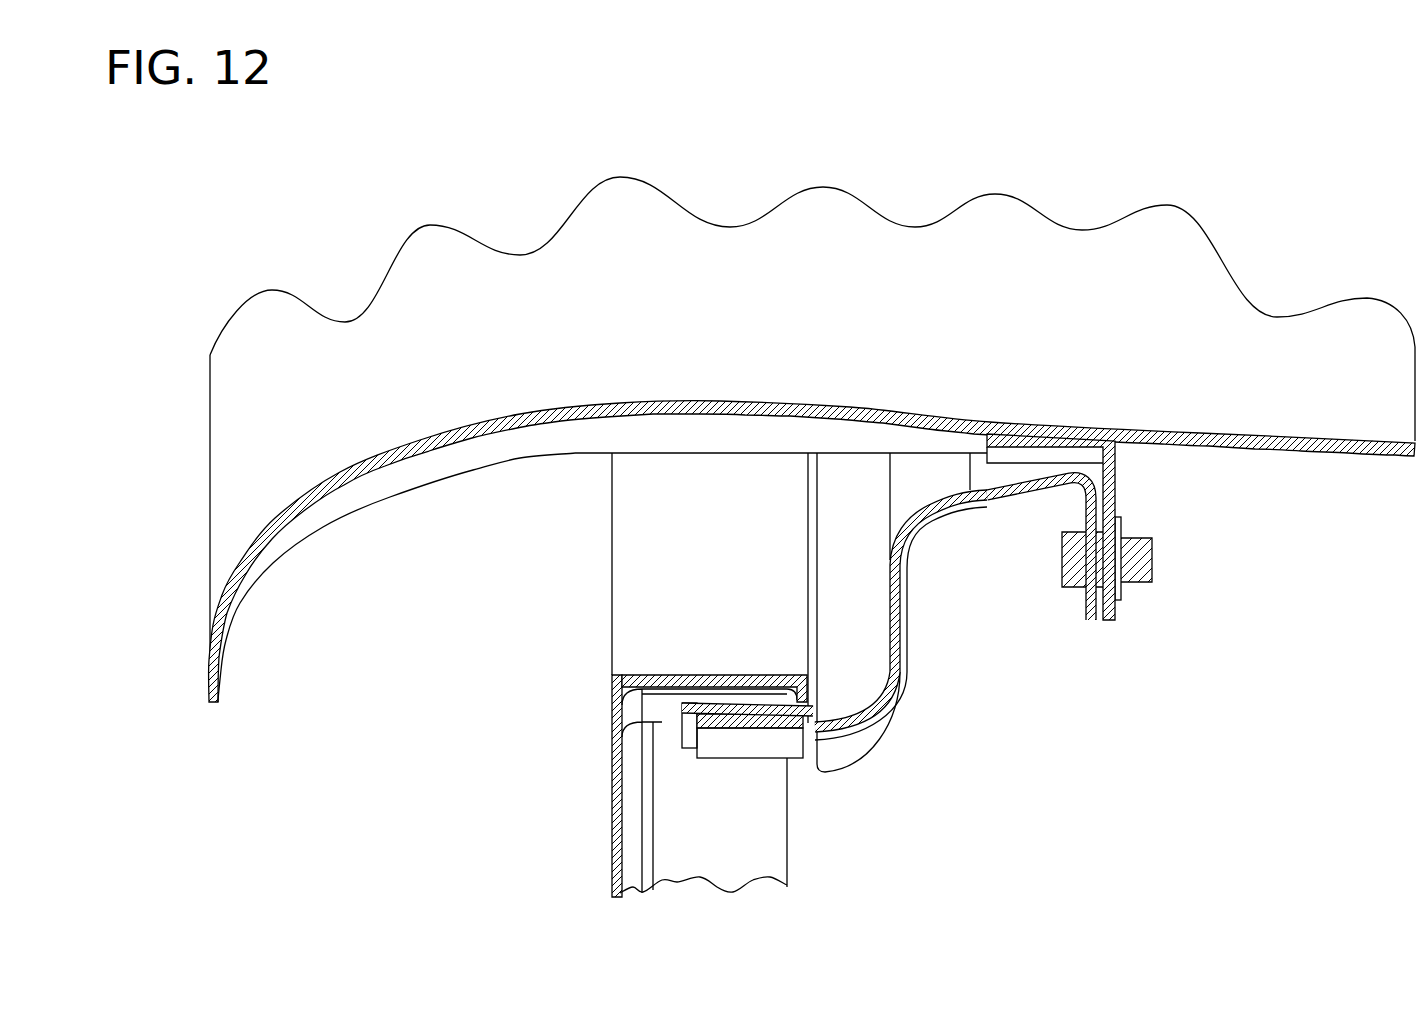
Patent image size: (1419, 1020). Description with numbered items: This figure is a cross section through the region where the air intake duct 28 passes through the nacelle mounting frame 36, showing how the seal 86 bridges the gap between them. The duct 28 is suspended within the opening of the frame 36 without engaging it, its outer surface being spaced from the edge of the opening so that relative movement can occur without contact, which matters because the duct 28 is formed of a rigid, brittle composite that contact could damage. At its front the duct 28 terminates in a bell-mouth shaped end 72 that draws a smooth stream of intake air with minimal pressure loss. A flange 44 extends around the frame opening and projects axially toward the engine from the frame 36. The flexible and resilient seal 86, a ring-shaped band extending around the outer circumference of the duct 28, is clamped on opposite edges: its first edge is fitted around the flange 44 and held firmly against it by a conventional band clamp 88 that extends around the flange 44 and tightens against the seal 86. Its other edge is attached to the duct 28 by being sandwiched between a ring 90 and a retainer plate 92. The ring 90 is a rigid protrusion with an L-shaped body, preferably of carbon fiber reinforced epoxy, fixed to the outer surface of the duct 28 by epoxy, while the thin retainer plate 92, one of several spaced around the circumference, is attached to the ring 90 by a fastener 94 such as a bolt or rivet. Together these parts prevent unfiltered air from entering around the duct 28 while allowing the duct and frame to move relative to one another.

The duct 28 is at (470, 472).
The frame 36 is at (612, 795).
The flange 44 is at (705, 673).
The bell-mouth shaped end 72 is at (209, 670).
The seal 86 is at (903, 627).
The band clamp 88 is at (750, 758).
The ring 90 is at (1117, 474).
The retainer plate 92 is at (1088, 613).
The fastener 94 is at (1152, 566).